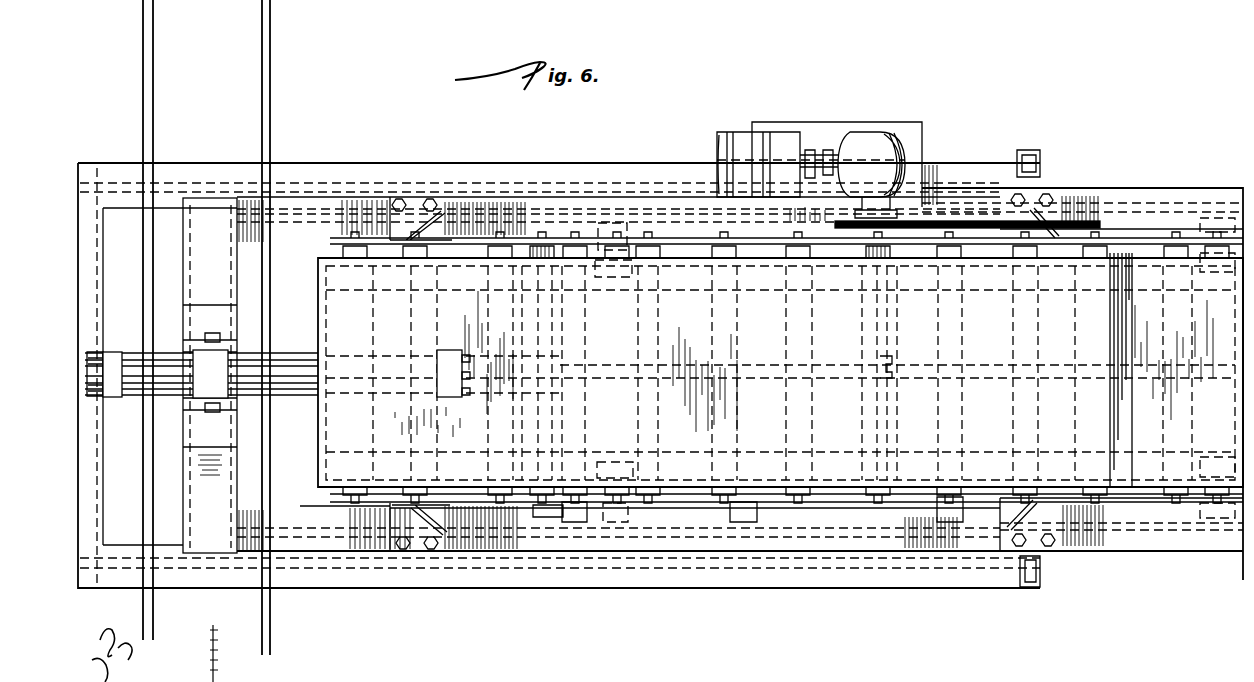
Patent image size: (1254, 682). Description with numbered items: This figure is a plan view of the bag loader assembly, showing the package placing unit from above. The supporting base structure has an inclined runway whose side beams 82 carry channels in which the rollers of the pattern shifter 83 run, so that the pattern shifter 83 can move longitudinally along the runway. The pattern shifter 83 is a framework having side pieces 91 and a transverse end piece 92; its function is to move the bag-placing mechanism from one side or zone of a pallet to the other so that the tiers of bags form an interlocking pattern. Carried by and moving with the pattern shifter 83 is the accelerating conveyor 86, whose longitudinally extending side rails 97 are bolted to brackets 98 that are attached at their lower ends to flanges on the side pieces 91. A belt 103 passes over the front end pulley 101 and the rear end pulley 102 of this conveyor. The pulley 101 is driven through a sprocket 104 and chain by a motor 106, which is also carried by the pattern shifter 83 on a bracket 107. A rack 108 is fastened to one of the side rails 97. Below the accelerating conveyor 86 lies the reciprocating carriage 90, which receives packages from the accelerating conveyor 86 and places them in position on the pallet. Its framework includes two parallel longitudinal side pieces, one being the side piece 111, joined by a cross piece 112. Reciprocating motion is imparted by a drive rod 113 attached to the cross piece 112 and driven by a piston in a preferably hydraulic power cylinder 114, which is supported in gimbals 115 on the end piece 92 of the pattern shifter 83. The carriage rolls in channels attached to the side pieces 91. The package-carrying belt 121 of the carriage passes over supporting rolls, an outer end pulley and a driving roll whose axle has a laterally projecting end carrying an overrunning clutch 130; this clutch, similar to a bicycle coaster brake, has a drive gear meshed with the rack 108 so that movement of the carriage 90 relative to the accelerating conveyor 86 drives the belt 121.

The side beams 82 is at (583, 171).
The pattern shifter 83 is at (660, 555).
The accelerating conveyor 86 is at (310, 286).
The reciprocating carriage 90 is at (1149, 248).
The side pieces 91 is at (300, 503).
The transverse end piece 92 is at (210, 375).
The side rails 97 is at (778, 248).
The brackets 98 is at (432, 524).
The front end pulley 101 is at (1083, 487).
The rear end pulley 102 is at (338, 497).
The belt 103 is at (780, 366).
The sprocket 104 is at (1097, 222).
The motor 106 is at (745, 134).
The bracket 107 is at (826, 124).
The rack 108 is at (803, 510).
The side piece 111 is at (1163, 493).
The cross piece 112 is at (892, 370).
The drive rod 113 is at (601, 368).
The power cylinder 114 is at (285, 372).
The gimbals 115 is at (218, 390).
The belt 121 is at (1174, 370).
The overrunning clutch 130 is at (947, 540).